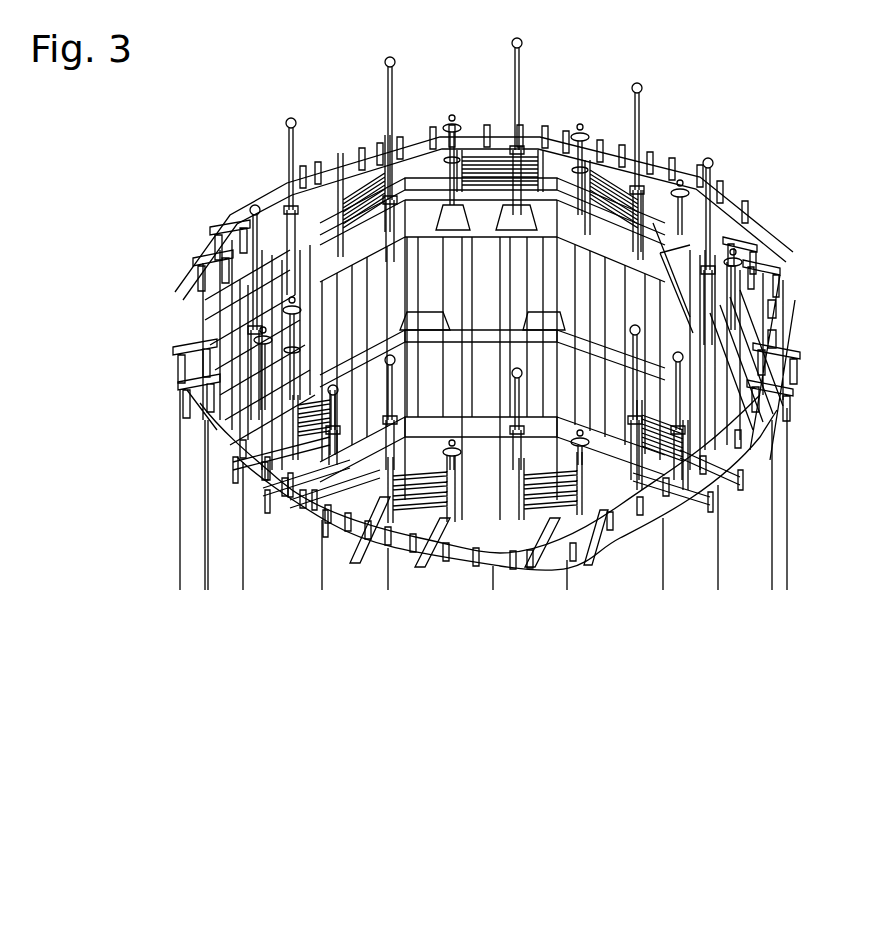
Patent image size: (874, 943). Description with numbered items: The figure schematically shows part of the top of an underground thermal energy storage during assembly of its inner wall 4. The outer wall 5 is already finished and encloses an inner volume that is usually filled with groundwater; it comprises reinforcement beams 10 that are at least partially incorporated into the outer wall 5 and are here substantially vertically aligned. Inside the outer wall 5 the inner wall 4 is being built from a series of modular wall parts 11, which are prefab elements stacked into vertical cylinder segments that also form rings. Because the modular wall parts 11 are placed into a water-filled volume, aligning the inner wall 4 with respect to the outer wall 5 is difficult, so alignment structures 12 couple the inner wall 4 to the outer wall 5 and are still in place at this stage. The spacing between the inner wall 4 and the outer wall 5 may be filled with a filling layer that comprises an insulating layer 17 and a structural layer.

The inner wall 4 is at (362, 320).
The outer wall 5 is at (218, 553).
The reinforcement beams 10 is at (513, 273).
The modular wall parts 11 is at (385, 302).
The alignment structures 12 is at (190, 265).
The insulating layer 17 is at (418, 187).